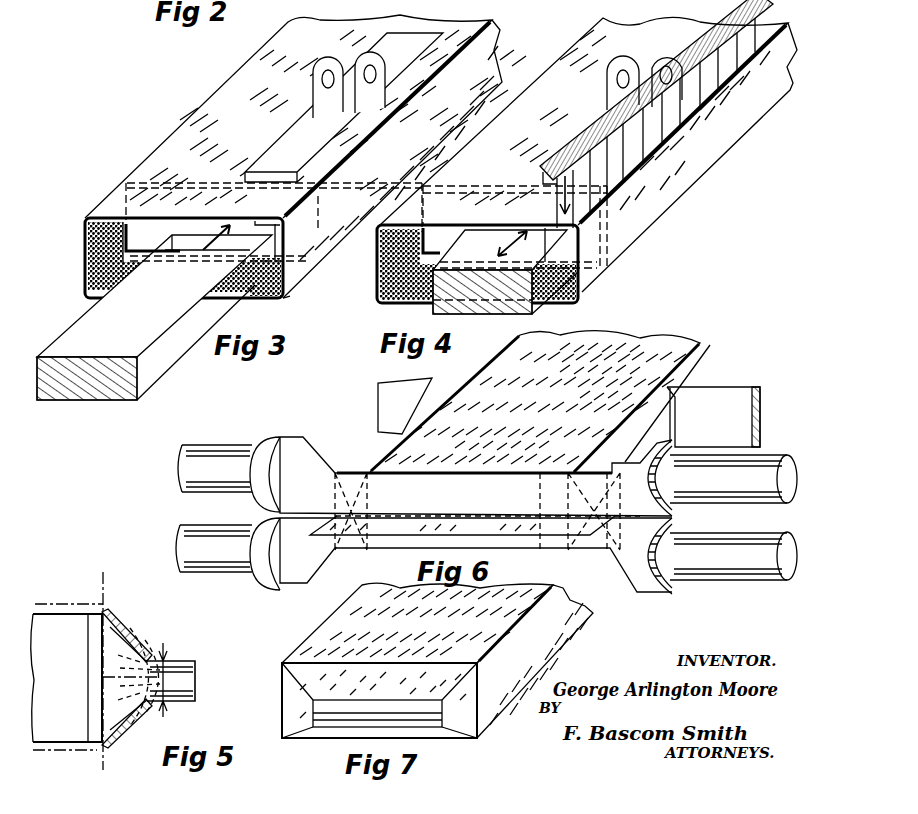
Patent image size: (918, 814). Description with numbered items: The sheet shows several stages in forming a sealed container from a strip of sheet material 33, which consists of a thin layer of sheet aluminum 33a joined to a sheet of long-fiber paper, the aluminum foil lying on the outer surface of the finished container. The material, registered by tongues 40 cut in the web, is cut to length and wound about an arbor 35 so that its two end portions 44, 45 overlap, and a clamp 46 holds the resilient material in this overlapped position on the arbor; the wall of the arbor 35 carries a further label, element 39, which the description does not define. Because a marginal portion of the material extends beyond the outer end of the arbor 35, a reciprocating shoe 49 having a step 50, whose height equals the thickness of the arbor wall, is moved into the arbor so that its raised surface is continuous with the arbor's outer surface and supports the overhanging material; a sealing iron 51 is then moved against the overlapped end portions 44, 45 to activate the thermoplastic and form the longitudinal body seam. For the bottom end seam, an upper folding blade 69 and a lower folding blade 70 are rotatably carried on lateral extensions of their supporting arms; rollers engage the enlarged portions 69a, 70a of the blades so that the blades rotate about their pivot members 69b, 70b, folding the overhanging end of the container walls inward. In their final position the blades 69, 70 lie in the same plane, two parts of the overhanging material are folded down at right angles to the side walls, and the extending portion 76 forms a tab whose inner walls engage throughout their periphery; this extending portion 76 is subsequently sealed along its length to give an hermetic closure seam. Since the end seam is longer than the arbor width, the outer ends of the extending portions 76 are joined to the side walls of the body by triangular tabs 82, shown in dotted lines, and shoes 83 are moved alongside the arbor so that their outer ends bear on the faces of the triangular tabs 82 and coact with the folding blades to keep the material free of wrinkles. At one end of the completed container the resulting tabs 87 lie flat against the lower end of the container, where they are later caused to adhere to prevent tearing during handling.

In FIG. 3, the strip of sheet material 33 is at (88, 292).
In FIG. 4, the strip of sheet material 33 is at (515, 228).
In FIG. 3, the thin layer of sheet aluminum 33a is at (232, 78).
In FIG. 3, the arbor 35 is at (123, 229).
In FIG. 4, the arbor 35 is at (420, 243).
In FIG. 3, the side wall 39 is at (92, 262).
In FIG. 4, the tongue 40 is at (569, 280).
In FIG. 3, the end portion 44 is at (280, 217).
In FIG. 3, the end portion 45 is at (265, 240).
In FIG. 3, the clamp 46 is at (398, 50).
In FIG. 4, the clamp 46 is at (590, 133).
In FIG. 3, the reciprocating shoe 49 is at (153, 371).
In FIG. 3, the step 50 is at (160, 285).
In FIG. 4, the sealing iron 51 is at (633, 173).
In FIG. 6, the upper folding blade 69 is at (482, 501).
In FIG. 5, the upper folding blade 69 is at (122, 628).
In FIG. 6, the enlarged portion of upper folding blade 69a is at (300, 455).
In FIG. 6, the pivot member of upper folding blade 69b is at (217, 448).
In FIG. 6, the lower folding blade 70 is at (528, 548).
In FIG. 5, the lower folding blade 70 is at (113, 744).
In FIG. 6, the enlarged portion of lower folding blade 70a is at (633, 567).
In FIG. 6, the pivot member of lower folding blade 70b is at (718, 563).
In FIG. 3, the extending portion 76 is at (291, 296).
In FIG. 4, the extending portion 76 is at (583, 288).
In FIG. 6, the extending portion 76 is at (397, 523).
In FIG. 5, the extending portion 76 is at (170, 641).
In FIG. 7, the extending portion 76 is at (337, 717).
In FIG. 6, the triangular tab 82 is at (362, 460).
In FIG. 6, the shoe 83 is at (403, 432).
In FIG. 5, the shoe 83 is at (92, 675).
In FIG. 7, the tab 87 is at (287, 689).